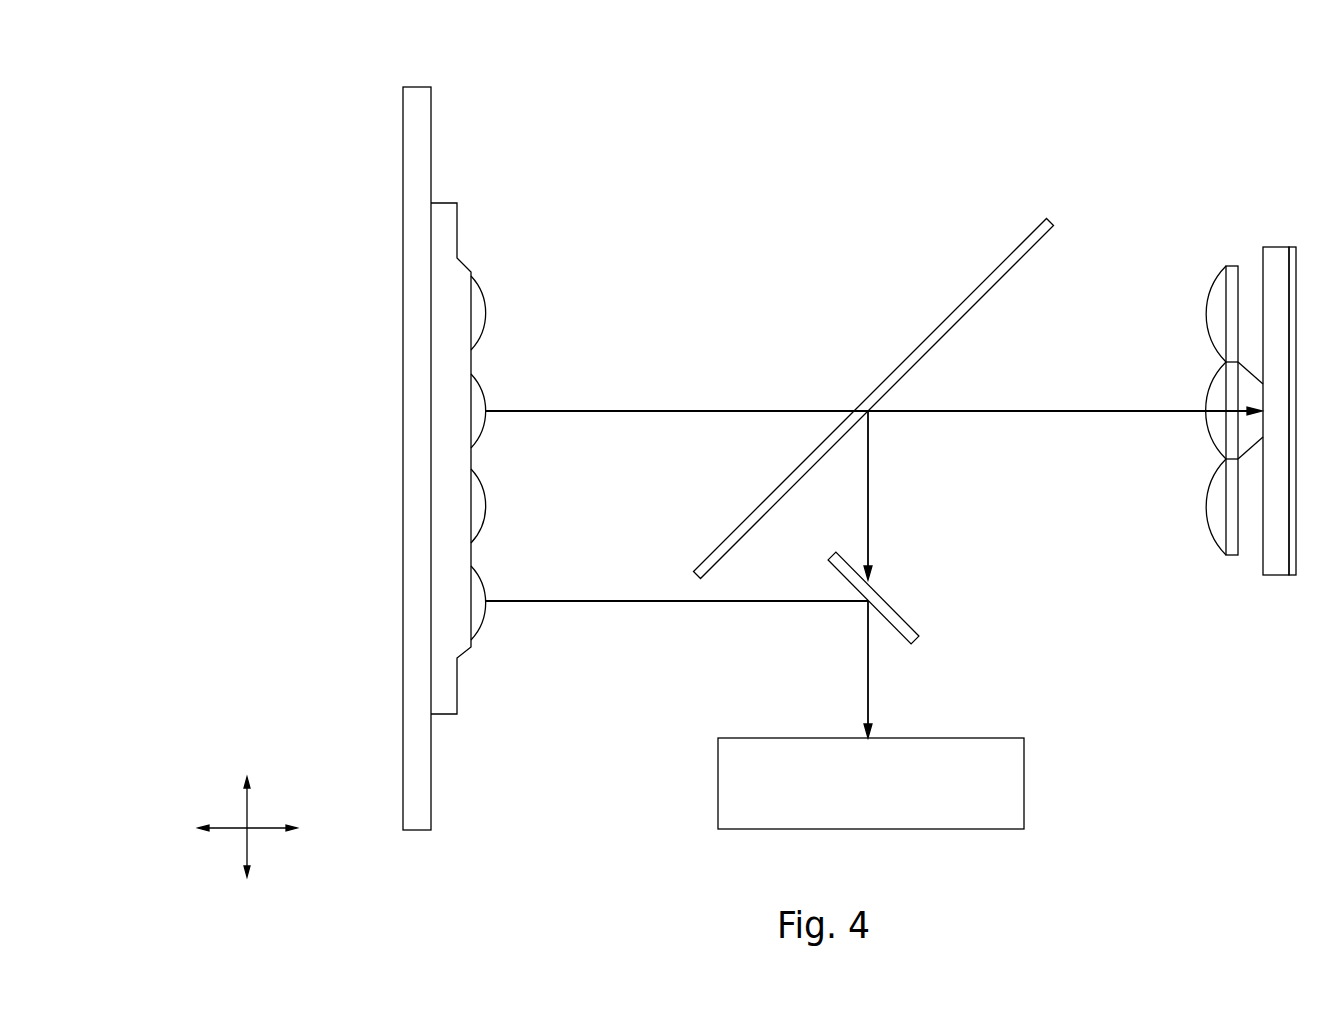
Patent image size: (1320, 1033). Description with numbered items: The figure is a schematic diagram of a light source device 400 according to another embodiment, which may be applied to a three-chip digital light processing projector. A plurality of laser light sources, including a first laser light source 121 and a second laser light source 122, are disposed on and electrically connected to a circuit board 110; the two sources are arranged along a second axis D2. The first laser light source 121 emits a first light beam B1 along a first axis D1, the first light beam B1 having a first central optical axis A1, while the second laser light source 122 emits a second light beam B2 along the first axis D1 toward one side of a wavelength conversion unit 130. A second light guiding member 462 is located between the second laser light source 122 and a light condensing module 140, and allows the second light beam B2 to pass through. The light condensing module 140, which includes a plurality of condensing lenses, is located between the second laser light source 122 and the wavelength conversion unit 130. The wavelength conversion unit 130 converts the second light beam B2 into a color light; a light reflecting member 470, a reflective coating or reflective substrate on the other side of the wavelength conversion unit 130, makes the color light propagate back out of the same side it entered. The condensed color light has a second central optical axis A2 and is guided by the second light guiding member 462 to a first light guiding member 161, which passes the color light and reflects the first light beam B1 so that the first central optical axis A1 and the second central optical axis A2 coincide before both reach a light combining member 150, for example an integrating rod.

The light source device 400 is at (302, 54).
The circuit board 110 is at (416, 87).
The first laser light source 121 is at (482, 620).
The second laser light source 122 is at (481, 392).
The second light guiding member 462 is at (1050, 218).
The first light guiding member 161 is at (919, 642).
The light combining member 150 is at (718, 786).
The light condensing module 140 is at (1232, 266).
The wavelength conversion unit 130 is at (1274, 247).
The light reflecting member 470 is at (1293, 247).
The first light beam B1 is at (612, 601).
The second light beam B2 is at (678, 411).
The first central optical axis A1 is at (800, 601).
The second central optical axis A2 is at (868, 500).
The first axis D1 is at (250, 829).
The second axis D2 is at (245, 829).